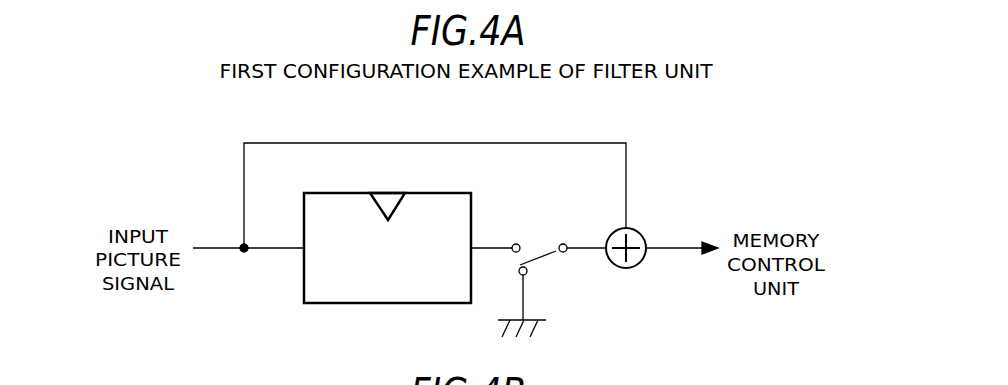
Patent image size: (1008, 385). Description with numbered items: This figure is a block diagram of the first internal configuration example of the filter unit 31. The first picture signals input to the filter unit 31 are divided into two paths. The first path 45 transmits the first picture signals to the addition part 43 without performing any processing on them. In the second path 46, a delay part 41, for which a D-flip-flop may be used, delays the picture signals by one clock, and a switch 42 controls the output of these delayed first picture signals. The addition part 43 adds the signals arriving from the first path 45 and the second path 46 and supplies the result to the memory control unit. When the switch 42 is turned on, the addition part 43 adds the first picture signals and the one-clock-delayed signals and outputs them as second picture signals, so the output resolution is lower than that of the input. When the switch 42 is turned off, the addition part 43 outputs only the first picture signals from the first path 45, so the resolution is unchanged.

The filter unit 31 is at (150, 163).
The delay part 41 is at (345, 304).
The switch 42 is at (576, 311).
The addition part 43 is at (646, 234).
The first path 45 is at (336, 143).
The second path 46 is at (272, 250).